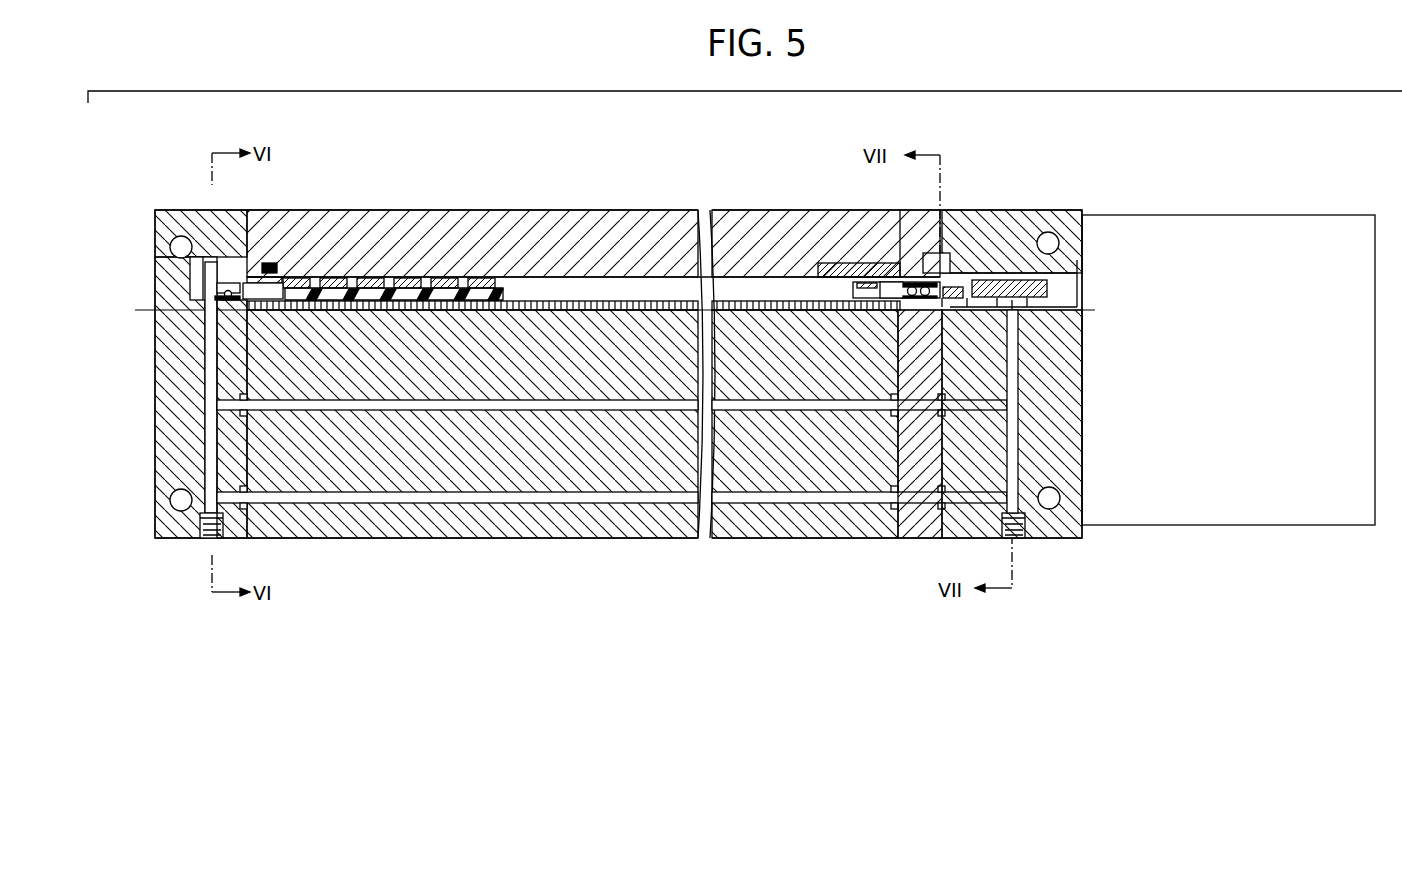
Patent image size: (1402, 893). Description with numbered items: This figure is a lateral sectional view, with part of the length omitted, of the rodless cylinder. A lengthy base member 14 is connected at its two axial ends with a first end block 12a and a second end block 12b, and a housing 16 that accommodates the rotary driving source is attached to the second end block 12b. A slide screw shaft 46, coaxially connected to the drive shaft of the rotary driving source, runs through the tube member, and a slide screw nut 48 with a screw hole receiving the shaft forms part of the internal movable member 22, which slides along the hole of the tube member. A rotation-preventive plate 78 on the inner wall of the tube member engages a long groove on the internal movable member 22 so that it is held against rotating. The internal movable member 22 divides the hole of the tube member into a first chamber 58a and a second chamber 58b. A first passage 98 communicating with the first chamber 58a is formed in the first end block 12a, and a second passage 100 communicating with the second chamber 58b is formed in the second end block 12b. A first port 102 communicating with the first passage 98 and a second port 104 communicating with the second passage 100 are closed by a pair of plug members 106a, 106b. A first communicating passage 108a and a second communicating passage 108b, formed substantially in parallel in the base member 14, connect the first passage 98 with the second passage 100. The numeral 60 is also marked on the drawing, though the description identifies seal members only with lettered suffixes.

The first end block 12a is at (176, 362).
The second end block 12b is at (1065, 380).
The base member 14 is at (386, 544).
The housing 16 is at (1241, 252).
The internal movable member 22 is at (333, 283).
The slide screw shaft 46 is at (613, 302).
The slide screw nut 48 is at (392, 296).
The first chamber 58a is at (263, 289).
The second chamber 58b is at (779, 288).
The bolts 60 is at (242, 418).
The rotation-preventive plate 78 is at (474, 270).
The first passage 98 is at (212, 422).
The second passage 100 is at (1013, 442).
The first port 102 is at (203, 540).
The second port 104 is at (1022, 538).
The plug member 106a is at (226, 540).
The plug member 106b is at (1004, 532).
The first communicating passage 108a is at (560, 406).
The second communicating passage 108b is at (815, 504).